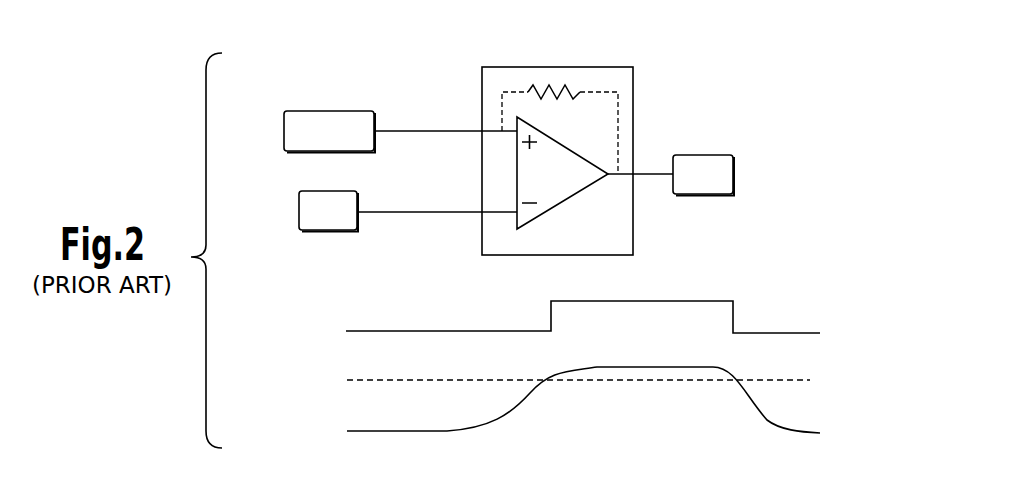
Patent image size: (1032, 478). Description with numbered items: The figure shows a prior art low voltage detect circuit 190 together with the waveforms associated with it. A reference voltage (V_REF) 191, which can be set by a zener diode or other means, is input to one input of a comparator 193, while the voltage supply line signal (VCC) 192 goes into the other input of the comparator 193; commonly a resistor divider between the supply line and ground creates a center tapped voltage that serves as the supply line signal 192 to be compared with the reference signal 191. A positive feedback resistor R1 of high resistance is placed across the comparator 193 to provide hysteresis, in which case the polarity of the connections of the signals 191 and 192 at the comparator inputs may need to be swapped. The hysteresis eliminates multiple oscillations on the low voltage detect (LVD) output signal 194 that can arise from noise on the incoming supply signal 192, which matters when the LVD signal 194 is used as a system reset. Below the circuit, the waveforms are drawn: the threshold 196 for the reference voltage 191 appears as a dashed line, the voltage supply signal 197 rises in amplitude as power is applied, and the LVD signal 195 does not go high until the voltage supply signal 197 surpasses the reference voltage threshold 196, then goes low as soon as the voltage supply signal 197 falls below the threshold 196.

The circuit 190 is at (809, 142).
The reference voltage (V_REF) 191 is at (305, 111).
The voltage supply line signal (VCC) 192 is at (300, 192).
The comparator 193 is at (583, 252).
The low voltage detect (LVD) output signal 194 is at (677, 155).
The LVD signal waveform 195 is at (803, 333).
The reference voltage threshold 196 is at (810, 380).
The voltage supply signal waveform 197 is at (807, 432).
The positive feedback resistor R1 is at (532, 90).